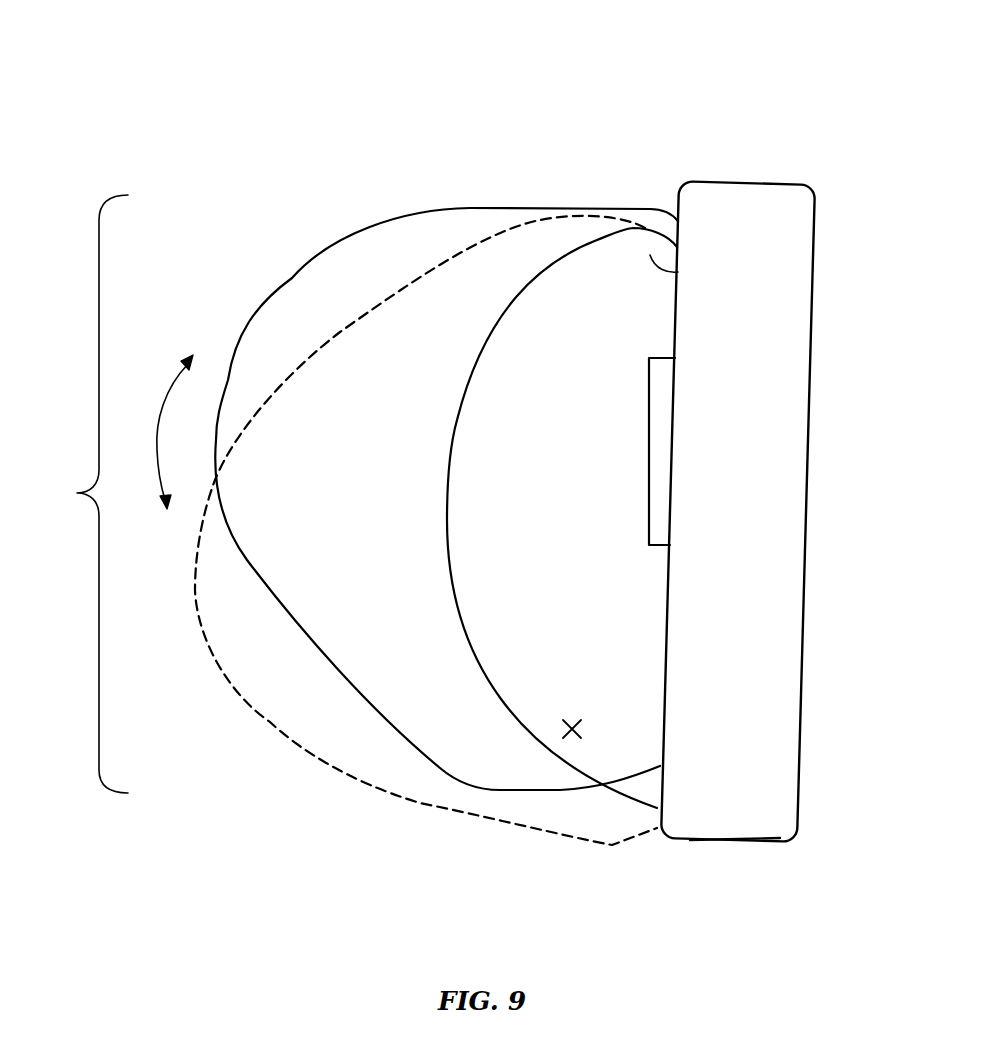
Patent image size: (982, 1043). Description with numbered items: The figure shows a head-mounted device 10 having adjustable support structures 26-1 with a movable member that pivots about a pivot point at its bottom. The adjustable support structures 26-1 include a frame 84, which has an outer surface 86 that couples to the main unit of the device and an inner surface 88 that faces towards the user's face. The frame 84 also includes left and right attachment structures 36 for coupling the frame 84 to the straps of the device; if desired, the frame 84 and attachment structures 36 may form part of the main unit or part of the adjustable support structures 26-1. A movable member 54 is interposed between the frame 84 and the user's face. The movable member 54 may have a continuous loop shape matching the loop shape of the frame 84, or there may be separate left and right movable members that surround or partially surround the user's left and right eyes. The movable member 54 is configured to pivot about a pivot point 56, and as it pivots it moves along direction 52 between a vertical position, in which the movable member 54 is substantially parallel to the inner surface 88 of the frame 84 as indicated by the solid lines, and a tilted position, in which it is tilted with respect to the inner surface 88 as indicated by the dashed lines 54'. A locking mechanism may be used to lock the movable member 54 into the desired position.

The device 10 is at (776, 471).
The adjustable support structures 26-1 is at (355, 539).
The attachment structures 36 is at (662, 378).
The direction 52 is at (158, 420).
The movable member 54 is at (446, 545).
The dashed lines 54' is at (426, 535).
The pivot point 56 is at (573, 742).
The frame 84 is at (750, 843).
The outer surface 86 is at (813, 336).
The inner surface 88 is at (650, 255).